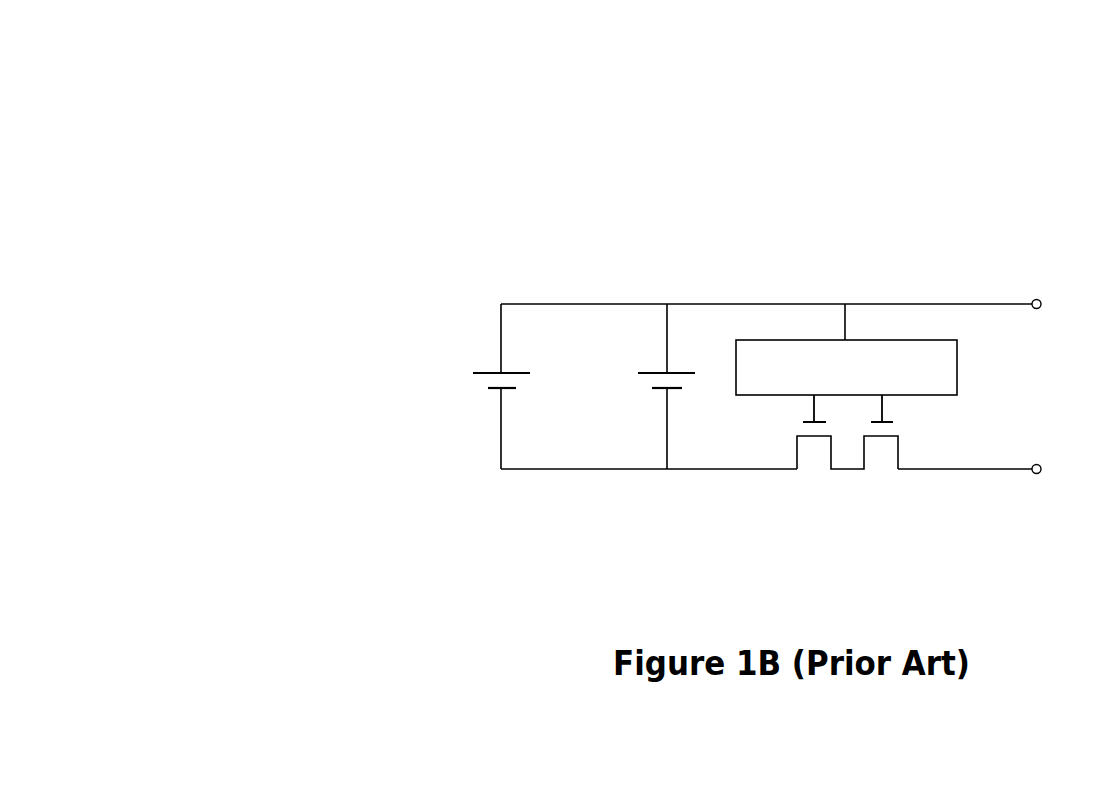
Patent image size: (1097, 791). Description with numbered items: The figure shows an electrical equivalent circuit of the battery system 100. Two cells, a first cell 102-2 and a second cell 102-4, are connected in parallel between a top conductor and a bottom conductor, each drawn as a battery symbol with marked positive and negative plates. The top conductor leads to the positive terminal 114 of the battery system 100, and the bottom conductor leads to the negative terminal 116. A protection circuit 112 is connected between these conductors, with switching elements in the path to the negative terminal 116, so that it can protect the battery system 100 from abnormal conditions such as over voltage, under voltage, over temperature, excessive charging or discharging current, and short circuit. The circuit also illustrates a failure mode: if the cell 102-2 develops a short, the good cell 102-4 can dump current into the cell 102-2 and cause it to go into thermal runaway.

The battery system 100 is at (303, 81).
The cell 102-2 is at (471, 380).
The cell 102-4 is at (639, 384).
The protection circuit 112 is at (868, 381).
The positive terminal 114 is at (1041, 300).
The negative terminal 116 is at (1041, 473).